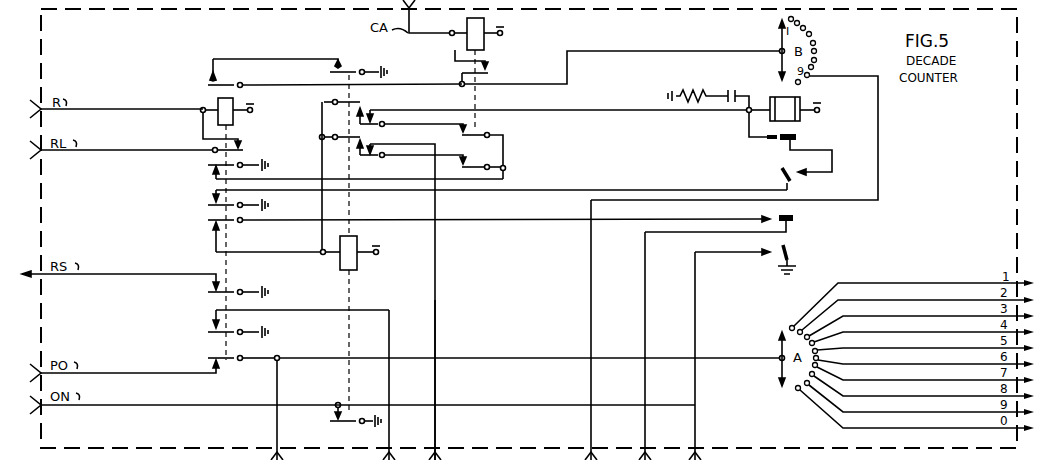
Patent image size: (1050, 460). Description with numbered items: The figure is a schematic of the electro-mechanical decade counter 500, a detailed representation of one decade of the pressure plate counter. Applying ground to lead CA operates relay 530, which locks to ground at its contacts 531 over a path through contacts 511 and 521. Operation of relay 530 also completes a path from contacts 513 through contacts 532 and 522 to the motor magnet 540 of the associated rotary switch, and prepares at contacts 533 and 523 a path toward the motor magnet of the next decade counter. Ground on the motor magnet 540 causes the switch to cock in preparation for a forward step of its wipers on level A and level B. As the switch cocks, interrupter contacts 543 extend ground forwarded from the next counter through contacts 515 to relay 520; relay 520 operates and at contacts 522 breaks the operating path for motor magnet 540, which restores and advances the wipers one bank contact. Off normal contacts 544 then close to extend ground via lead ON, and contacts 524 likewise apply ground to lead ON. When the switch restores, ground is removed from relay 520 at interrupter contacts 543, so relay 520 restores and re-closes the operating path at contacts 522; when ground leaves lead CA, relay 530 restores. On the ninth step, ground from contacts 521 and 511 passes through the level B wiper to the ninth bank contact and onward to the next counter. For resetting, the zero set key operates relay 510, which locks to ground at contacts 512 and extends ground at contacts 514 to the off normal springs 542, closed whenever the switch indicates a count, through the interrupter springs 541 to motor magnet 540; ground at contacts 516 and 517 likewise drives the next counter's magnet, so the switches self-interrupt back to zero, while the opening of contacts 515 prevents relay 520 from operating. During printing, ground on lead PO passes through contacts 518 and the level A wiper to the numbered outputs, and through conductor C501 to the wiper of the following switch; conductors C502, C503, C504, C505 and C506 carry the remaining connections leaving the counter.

The decade counter 500 is at (954, 106).
The relay 510 is at (213, 106).
The contacts 511 is at (208, 87).
The contacts 512 is at (246, 148).
The contacts 513 is at (208, 166).
The contacts 514 is at (208, 205).
The contacts 515 is at (208, 222).
The contacts 516 is at (211, 292).
The contacts 517 is at (218, 330).
The contacts 518 is at (218, 360).
The relay 520 is at (357, 262).
The contacts 521 is at (334, 71).
The contacts 522 is at (372, 108).
The contacts 523 is at (375, 141).
The contacts 524 is at (332, 419).
The relay 530 is at (464, 24).
The contacts 531 is at (492, 68).
The contacts 532 is at (490, 133).
The contacts 533 is at (494, 164).
The motor magnet 540 is at (800, 118).
The interrupter springs 541 is at (772, 145).
The off normal springs 542 is at (796, 176).
The interrupter contacts 543 is at (794, 218).
The off normal contacts 544 is at (792, 252).
The conductor C501 is at (276, 429).
The conductor C502 is at (387, 440).
The conductor C503 is at (435, 442).
The conductor C504 is at (591, 422).
The conductor C505 is at (680, 422).
The conductor C506 is at (697, 440).